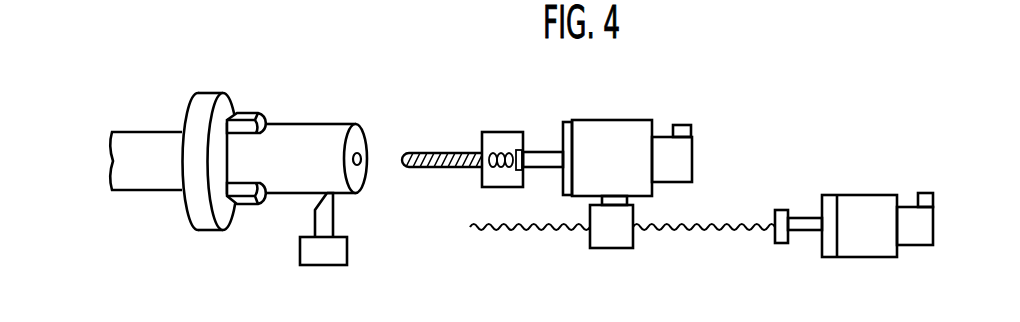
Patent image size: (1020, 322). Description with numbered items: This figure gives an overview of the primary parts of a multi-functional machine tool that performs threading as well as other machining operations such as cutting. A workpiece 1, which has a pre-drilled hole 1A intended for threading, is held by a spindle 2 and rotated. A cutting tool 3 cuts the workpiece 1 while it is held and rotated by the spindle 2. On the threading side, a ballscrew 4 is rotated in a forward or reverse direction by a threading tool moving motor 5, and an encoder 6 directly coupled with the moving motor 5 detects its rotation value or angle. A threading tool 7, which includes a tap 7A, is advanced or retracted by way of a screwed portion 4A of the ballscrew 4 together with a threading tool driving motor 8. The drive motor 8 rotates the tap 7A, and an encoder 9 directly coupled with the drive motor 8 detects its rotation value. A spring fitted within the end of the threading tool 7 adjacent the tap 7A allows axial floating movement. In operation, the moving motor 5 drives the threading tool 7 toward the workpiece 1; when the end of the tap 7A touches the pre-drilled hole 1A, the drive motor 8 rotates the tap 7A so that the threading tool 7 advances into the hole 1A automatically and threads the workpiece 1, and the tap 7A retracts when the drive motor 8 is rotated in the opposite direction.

The workpiece 1 is at (313, 133).
The pre-drilled hole 1A is at (359, 157).
The spindle 2 is at (184, 205).
The cutting tool 3 is at (335, 217).
The ballscrew 4 is at (700, 237).
The screwed portion 4A is at (617, 248).
The threading tool moving motor 5 is at (858, 250).
The encoder 6 is at (915, 248).
The threading tool 7 is at (497, 140).
The tap 7A is at (440, 152).
The threading tool driving motor 8 is at (607, 142).
The encoder 9 is at (690, 150).